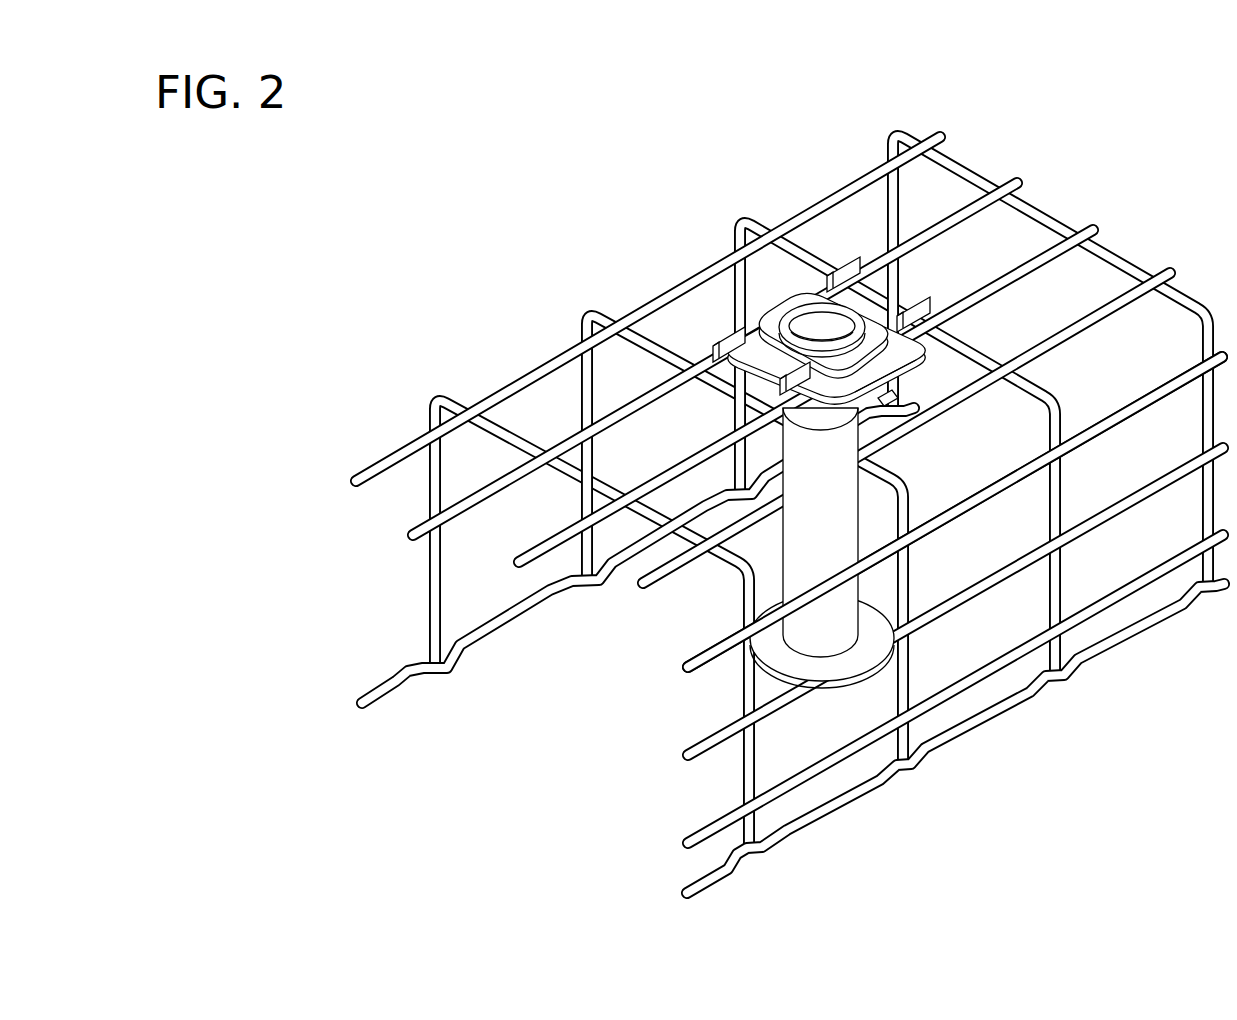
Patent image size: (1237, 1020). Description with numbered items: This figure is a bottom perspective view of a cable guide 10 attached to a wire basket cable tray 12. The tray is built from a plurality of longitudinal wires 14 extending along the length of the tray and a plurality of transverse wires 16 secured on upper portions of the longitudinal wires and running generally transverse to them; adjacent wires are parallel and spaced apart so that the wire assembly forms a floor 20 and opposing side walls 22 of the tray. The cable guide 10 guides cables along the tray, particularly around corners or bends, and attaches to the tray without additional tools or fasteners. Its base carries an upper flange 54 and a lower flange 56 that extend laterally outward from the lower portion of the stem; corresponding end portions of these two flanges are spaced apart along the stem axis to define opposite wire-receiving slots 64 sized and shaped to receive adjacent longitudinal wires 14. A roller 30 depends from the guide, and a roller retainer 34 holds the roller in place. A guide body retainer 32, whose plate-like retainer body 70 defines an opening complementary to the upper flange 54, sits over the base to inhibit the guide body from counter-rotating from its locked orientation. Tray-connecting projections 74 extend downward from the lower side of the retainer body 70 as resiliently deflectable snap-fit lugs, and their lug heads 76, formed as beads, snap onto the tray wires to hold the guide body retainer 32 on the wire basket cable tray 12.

The cable guide 10 is at (790, 514).
The wire basket cable tray 12 is at (790, 514).
The longitudinal wires 14 is at (942, 232).
The transverse wires 16 is at (987, 358).
The floor 20 is at (1062, 205).
The side walls 22 is at (1112, 658).
The roller 30 is at (817, 561).
The guide body retainer 32 is at (840, 327).
The roller retainer 34 is at (780, 663).
The upper flange 54 is at (870, 398).
The lower flange 56 is at (789, 288).
The wire-receiving slots 64 is at (893, 408).
The retainer body 70 is at (915, 375).
The tray-connecting projections 74 is at (905, 300).
The lug heads 76 is at (843, 282).